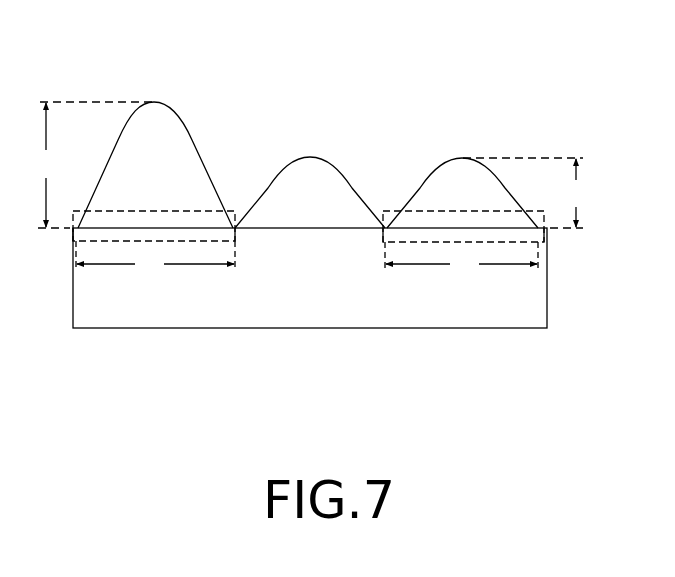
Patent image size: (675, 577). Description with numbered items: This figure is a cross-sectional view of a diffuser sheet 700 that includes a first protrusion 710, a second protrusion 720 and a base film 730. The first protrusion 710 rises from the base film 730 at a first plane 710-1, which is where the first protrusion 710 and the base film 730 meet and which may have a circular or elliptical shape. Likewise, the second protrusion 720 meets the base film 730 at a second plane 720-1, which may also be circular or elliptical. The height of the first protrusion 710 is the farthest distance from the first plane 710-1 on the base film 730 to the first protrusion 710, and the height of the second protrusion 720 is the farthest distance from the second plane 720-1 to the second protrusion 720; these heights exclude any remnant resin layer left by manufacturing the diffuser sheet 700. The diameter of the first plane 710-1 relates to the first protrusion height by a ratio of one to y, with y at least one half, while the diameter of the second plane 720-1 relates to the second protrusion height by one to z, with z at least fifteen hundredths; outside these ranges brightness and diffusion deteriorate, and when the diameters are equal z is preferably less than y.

The diffuser sheet 700 is at (383, 42).
The first protrusion 710 is at (165, 121).
The second protrusion 720 is at (445, 177).
The base film 730 is at (310, 330).
The first plane 710-1 is at (120, 242).
The second plane 720-1 is at (433, 242).